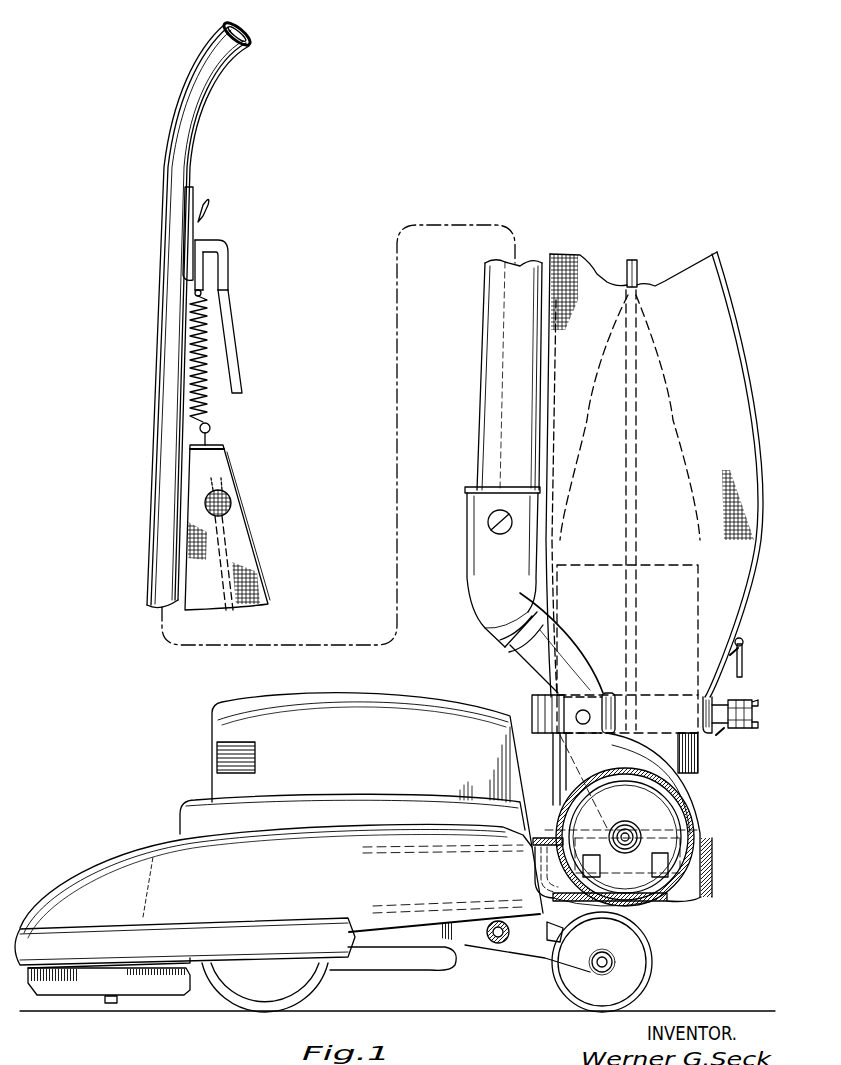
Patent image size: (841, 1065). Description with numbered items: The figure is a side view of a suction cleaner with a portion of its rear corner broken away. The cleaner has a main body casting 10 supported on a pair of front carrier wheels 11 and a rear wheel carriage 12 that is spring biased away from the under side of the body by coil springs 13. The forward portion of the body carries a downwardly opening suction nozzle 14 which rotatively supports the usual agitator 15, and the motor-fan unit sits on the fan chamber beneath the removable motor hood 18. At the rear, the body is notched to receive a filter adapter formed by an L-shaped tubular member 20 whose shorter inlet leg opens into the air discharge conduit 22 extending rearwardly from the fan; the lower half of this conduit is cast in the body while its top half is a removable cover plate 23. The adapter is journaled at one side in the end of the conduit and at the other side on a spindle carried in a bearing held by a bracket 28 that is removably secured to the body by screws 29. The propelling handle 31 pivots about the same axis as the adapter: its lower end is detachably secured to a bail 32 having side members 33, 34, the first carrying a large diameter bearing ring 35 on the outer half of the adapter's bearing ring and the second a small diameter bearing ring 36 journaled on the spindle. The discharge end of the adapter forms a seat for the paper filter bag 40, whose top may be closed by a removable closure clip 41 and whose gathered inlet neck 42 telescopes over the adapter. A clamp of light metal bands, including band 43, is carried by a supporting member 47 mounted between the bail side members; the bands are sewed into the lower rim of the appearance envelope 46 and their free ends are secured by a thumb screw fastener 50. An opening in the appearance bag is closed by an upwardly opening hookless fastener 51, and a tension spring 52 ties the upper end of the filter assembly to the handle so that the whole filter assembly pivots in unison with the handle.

The main body casting 10 is at (279, 882).
The front carrier wheels 11 is at (265, 987).
The rear wheel carriage 12 is at (602, 962).
The coil springs 13 is at (560, 935).
The suction nozzle 14 is at (160, 997).
The agitator 15 is at (105, 1003).
The motor hood 18 is at (372, 770).
The L-shaped tubular member 20 is at (699, 755).
The air discharge conduit 22 is at (643, 880).
The removable cover plate 23 is at (690, 818).
The bracket 28 is at (712, 850).
The screws 29 is at (703, 830).
The propelling handle 31 is at (162, 460).
The bail 32 is at (522, 643).
The side member 33 is at (605, 733).
The side member 34 is at (556, 757).
The large diameter bearing ring 35 is at (556, 808).
The small diameter bearing ring 36 is at (636, 838).
The paper filter bag 40 is at (236, 605).
The removable closure clip 41 is at (228, 493).
The inlet neck 42 is at (700, 628).
The light metal band 43 is at (711, 712).
The appearance envelope 46 is at (207, 602).
The supporting member 47 is at (533, 706).
The thumb screw fastener 50 is at (758, 705).
The hookless fastener 51 is at (744, 667).
The tension spring 52 is at (213, 410).